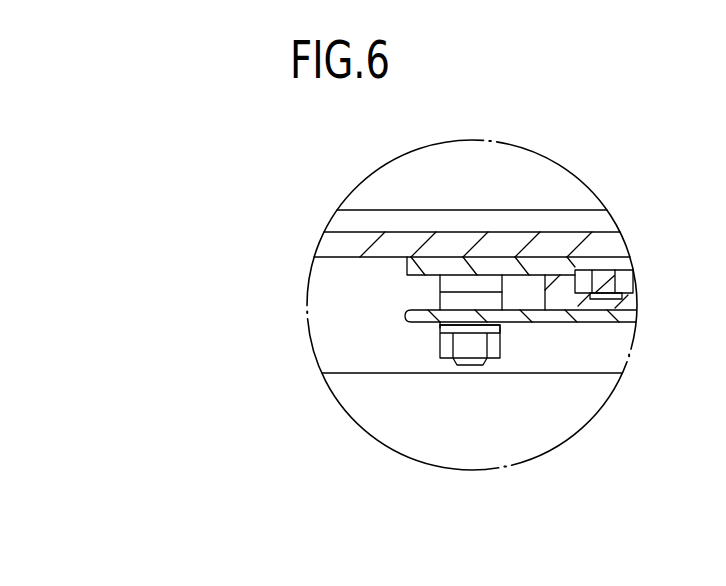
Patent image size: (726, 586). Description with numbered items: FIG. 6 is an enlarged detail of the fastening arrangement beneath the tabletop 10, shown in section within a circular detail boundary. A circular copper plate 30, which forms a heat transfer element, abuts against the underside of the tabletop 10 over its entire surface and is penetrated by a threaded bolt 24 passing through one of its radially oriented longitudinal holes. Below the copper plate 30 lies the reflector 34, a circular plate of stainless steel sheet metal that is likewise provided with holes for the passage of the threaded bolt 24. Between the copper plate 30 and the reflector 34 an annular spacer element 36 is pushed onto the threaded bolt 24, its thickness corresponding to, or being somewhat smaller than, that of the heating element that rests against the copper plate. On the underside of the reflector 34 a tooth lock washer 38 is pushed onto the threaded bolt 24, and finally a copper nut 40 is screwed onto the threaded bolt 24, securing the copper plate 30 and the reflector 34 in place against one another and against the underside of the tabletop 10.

The tabletop 10 is at (520, 237).
The copper plate 30 is at (553, 263).
The threaded bolt 24 is at (463, 365).
The spacer element 36 is at (447, 303).
The reflector 34 is at (597, 314).
The tooth lock washer 38 is at (493, 327).
The copper nut 40 is at (445, 345).